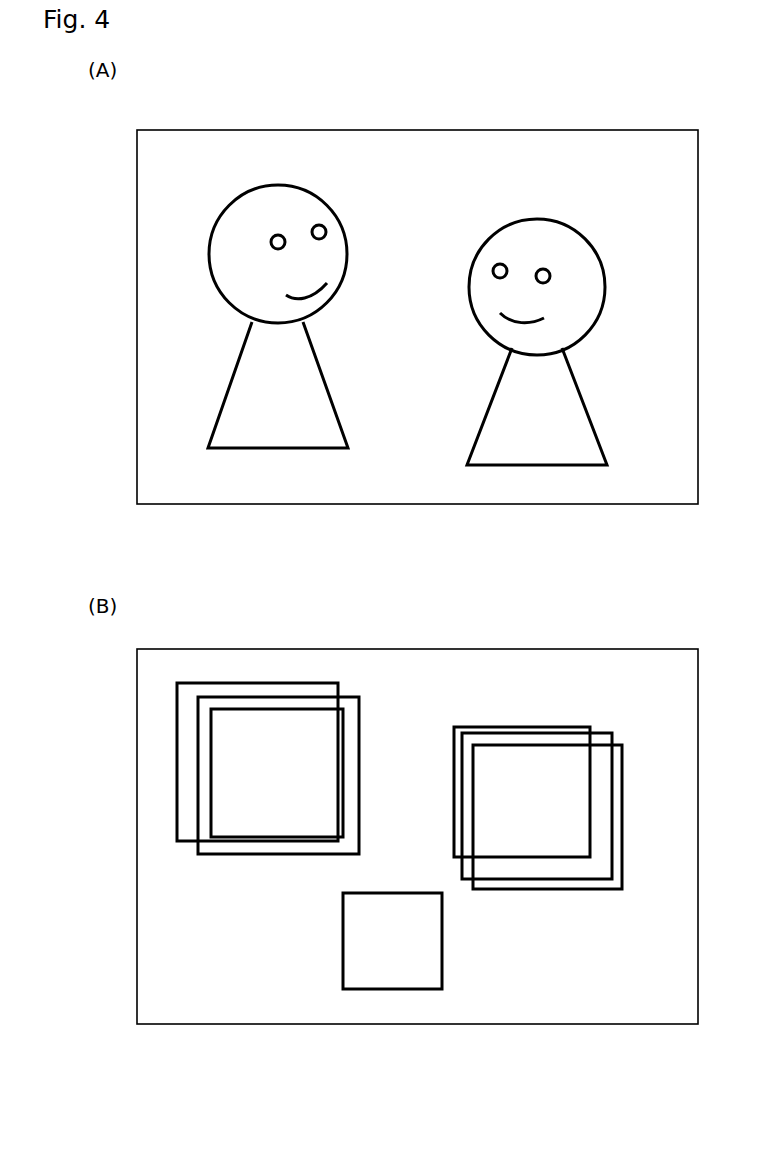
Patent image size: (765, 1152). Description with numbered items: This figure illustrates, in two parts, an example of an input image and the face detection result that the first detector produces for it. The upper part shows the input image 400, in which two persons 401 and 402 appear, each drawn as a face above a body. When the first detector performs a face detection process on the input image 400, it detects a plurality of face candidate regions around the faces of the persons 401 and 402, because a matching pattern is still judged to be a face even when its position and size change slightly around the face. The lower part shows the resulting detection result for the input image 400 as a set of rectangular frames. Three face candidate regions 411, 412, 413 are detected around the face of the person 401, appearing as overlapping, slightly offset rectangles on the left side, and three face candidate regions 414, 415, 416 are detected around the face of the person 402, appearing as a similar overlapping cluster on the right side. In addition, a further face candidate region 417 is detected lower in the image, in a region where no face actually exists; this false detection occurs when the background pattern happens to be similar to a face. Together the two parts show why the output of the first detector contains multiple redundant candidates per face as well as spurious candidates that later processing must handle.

The input image 400 is at (490, 130).
The person 401 is at (317, 190).
The person 402 is at (595, 242).
The face candidate region 411 is at (247, 682).
The face candidate region 412 is at (358, 694).
The face candidate region 413 is at (343, 739).
The face candidate region 414 is at (547, 725).
The face candidate region 415 is at (610, 733).
The face candidate region 416 is at (623, 762).
The face candidate region 417 is at (442, 957).